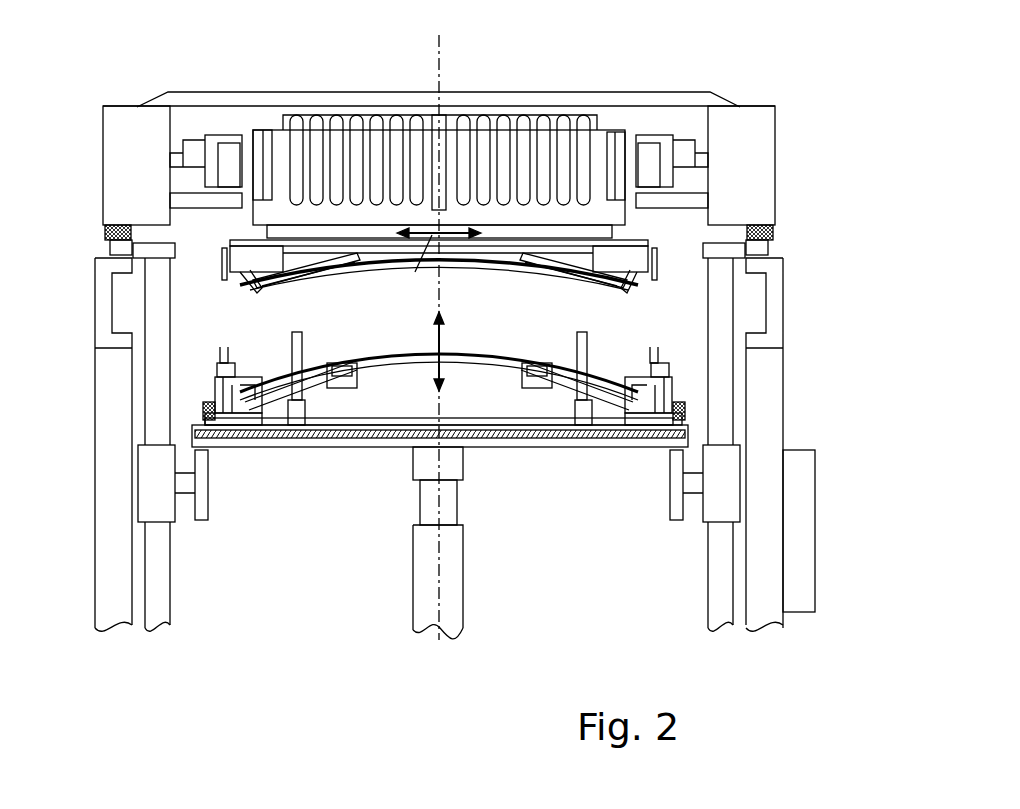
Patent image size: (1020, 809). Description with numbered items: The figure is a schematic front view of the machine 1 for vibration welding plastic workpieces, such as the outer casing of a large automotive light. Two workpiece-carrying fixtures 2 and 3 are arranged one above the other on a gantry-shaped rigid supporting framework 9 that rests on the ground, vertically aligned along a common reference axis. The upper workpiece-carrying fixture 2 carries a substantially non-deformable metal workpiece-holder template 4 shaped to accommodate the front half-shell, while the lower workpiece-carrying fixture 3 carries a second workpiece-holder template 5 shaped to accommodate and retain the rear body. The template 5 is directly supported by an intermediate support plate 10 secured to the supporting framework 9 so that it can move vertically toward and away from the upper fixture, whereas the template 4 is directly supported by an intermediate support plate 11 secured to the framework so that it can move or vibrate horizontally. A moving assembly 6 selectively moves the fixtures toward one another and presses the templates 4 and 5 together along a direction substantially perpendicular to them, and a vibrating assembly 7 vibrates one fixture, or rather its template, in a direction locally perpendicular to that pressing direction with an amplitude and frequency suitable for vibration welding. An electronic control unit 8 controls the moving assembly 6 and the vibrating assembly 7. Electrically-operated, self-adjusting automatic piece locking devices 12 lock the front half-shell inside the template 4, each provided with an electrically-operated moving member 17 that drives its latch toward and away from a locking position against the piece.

The machine 1 is at (273, 614).
The workpiece-carrying fixture 2 is at (337, 247).
The workpiece-carrying fixture 3 is at (325, 440).
The workpiece-holder template 4 is at (491, 258).
The workpiece-holder template 5 is at (398, 393).
The moving assembly 6 is at (452, 575).
The vibrating assembly 7 is at (503, 130).
The electronic control unit 8 is at (806, 543).
The supporting framework 9 is at (110, 505).
The intermediate support plate 10 is at (483, 435).
The intermediate support plate 11 is at (537, 243).
The automatic piece locking device 12 is at (217, 267).
The moving member 17 is at (217, 358).